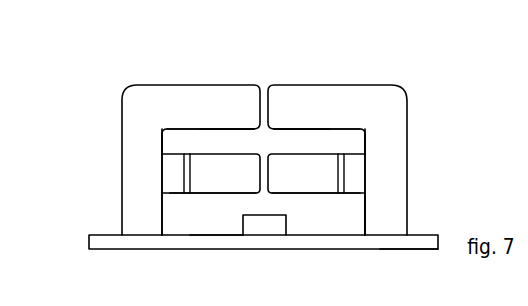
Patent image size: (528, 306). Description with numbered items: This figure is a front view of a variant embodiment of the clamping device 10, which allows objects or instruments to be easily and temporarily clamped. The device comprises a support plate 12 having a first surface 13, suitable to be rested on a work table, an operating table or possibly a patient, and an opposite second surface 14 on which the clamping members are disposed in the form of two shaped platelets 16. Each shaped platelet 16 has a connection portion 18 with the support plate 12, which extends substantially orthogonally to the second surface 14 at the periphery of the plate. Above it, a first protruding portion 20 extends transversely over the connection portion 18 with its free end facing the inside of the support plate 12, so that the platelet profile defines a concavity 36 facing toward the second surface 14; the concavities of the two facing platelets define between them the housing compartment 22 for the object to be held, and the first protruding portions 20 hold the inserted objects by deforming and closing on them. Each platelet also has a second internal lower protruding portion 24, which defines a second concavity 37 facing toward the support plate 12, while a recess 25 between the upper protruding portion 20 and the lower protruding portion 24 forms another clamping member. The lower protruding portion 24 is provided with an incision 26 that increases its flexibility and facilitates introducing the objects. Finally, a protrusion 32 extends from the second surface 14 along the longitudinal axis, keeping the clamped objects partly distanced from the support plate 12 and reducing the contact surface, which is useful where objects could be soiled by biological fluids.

The clamping device 10 is at (449, 95).
The support plate 12 is at (87, 242).
The first surface 13 is at (421, 250).
The second surface 14 is at (218, 233).
The shaped platelets 16 is at (124, 84).
The connection portion 18 is at (143, 171).
The first protruding portion 20 is at (224, 107).
The housing compartment 22 is at (366, 224).
The second lower protruding portion 24 is at (228, 178).
The recess 25 is at (162, 139).
The incision 26 is at (185, 172).
The protrusion 32 is at (263, 229).
The concavity 36 is at (227, 132).
The second concavity 37 is at (197, 196).